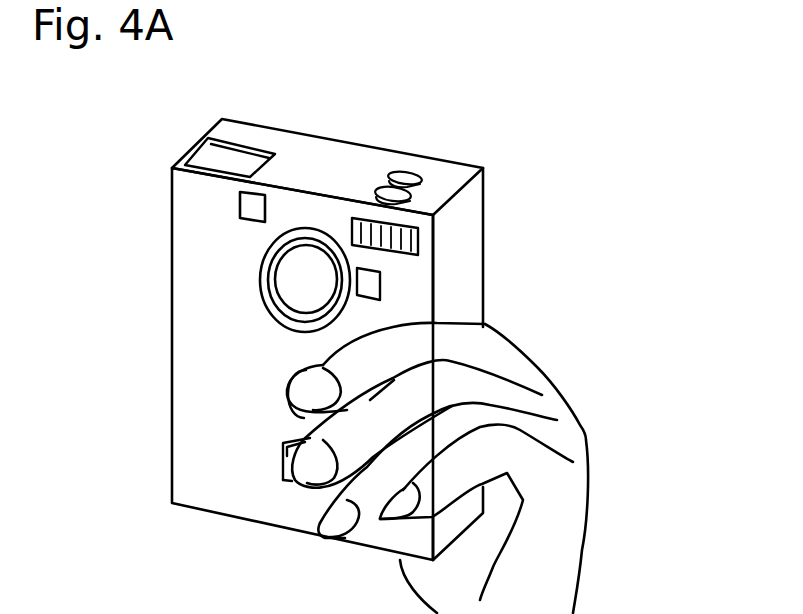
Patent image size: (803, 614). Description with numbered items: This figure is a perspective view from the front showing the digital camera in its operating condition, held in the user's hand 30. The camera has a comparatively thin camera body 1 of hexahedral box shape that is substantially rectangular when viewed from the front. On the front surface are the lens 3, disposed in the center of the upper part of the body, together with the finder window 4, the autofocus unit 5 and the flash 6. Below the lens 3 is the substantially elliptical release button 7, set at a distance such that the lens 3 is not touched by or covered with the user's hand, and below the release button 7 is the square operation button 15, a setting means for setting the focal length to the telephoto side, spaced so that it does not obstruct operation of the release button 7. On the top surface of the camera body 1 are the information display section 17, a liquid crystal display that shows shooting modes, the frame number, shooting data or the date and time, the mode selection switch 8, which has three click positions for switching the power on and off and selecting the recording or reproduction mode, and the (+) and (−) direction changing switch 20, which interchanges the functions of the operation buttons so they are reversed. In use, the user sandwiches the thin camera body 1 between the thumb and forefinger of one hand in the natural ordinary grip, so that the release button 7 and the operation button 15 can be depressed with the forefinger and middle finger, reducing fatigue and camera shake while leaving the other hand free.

The camera body 1 is at (462, 233).
The lens 3 is at (293, 280).
The finder window 4 is at (207, 202).
The autofocus unit 5 is at (373, 287).
The flash 6 is at (410, 242).
The release button 7 is at (290, 392).
The mode selection switch 8 is at (408, 177).
The operation button 15 is at (287, 462).
The information display section 17 is at (215, 153).
The (+) and (−) direction changing switch 20 is at (428, 198).
The hand 30 is at (547, 535).